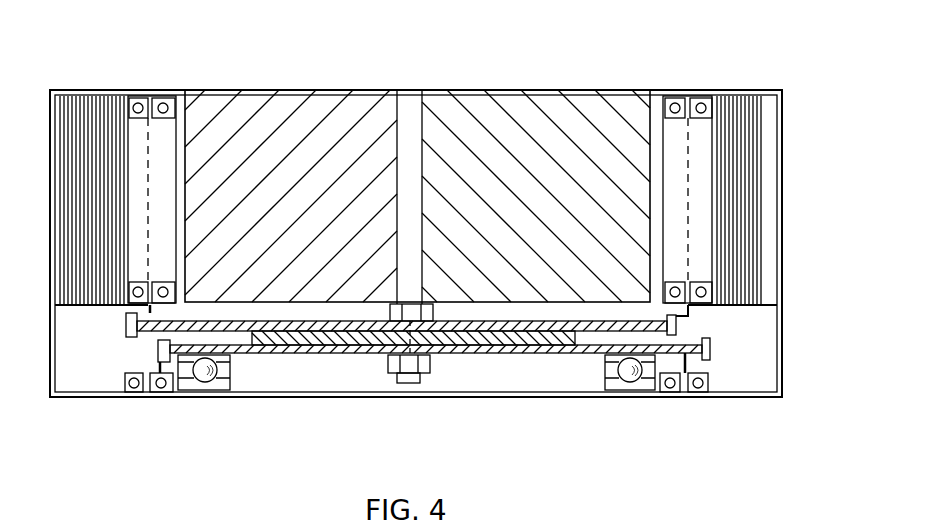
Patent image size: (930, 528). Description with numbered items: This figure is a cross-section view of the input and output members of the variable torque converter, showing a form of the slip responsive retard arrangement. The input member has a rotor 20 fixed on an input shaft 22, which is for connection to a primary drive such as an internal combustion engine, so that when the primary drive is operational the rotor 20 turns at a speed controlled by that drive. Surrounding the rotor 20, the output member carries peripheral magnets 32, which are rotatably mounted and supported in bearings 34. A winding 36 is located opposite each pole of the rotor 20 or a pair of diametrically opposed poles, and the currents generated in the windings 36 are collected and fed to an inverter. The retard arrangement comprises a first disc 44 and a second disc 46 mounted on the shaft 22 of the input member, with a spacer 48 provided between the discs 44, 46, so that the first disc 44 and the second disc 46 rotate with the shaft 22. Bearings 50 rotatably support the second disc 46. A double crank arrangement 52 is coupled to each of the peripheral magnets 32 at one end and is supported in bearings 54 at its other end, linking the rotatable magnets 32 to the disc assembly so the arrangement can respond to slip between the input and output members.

The rotor 20 is at (600, 78).
The input shaft 22 is at (411, 100).
The peripheral magnets 32 is at (715, 162).
The bearings 34 is at (700, 100).
The winding 36 is at (760, 218).
The first disc 44 is at (595, 326).
The second disc 46 is at (548, 354).
The spacer 48 is at (483, 336).
The bearings 50 is at (232, 384).
The double crank arrangement 52 is at (131, 349).
The bearings 54 is at (175, 395).